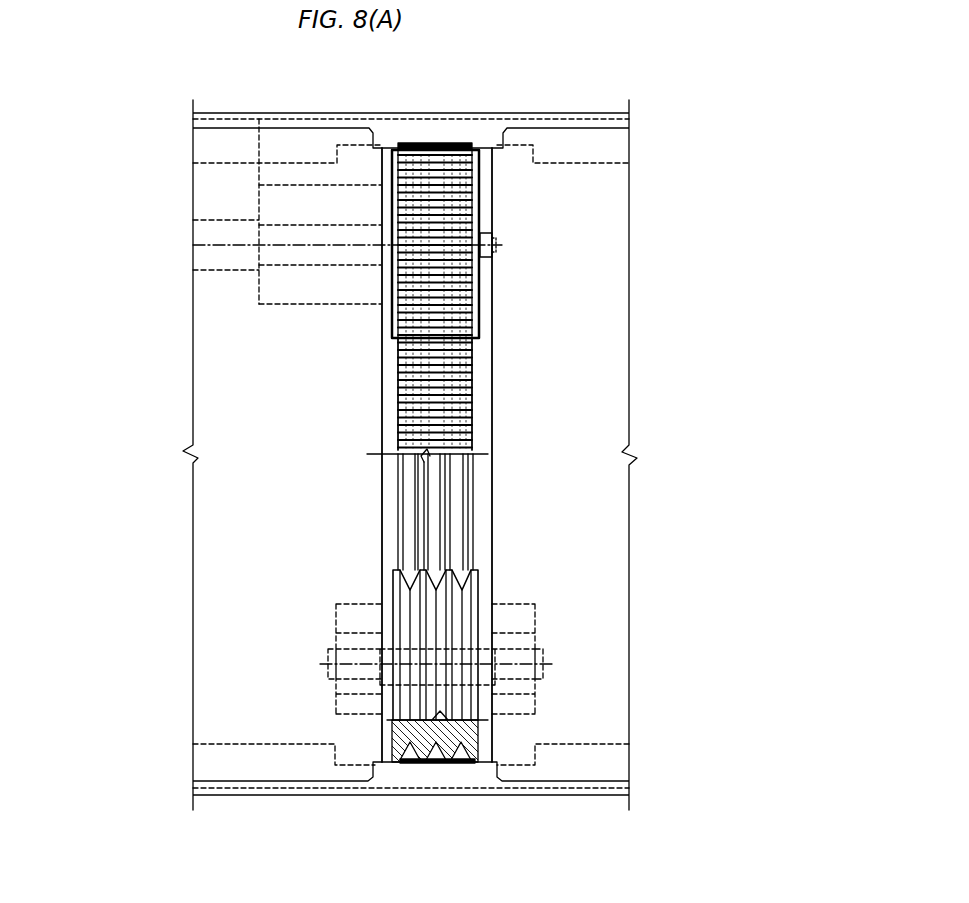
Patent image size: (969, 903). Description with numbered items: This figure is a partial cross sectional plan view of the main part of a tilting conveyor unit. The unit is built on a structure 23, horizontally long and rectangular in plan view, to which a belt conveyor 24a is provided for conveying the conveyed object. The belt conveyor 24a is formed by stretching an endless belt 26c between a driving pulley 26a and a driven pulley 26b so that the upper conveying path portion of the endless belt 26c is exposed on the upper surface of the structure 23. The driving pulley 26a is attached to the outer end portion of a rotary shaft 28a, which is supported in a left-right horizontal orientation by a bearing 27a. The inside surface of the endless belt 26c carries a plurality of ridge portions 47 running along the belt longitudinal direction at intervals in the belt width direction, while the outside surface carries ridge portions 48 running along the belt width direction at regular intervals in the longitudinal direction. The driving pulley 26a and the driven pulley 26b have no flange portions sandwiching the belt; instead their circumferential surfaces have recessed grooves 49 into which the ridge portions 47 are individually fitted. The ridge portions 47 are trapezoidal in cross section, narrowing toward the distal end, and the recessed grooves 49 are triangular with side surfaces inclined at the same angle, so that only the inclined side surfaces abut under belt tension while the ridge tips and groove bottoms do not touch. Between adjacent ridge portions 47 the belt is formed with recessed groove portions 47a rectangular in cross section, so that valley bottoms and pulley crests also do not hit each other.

The structure 23 is at (542, 106).
The belt conveyor 24a is at (378, 371).
The driving pulley 26a is at (486, 287).
The driven pulley 26b is at (385, 591).
The endless belt 26c is at (486, 414).
The bearing 27a is at (307, 287).
The rotary shaft 28a is at (207, 256).
The ridge portion 47 is at (405, 493).
The recessed groove portion 47a is at (418, 536).
The ridge portion 48 is at (410, 446).
The recessed groove 49 is at (405, 617).